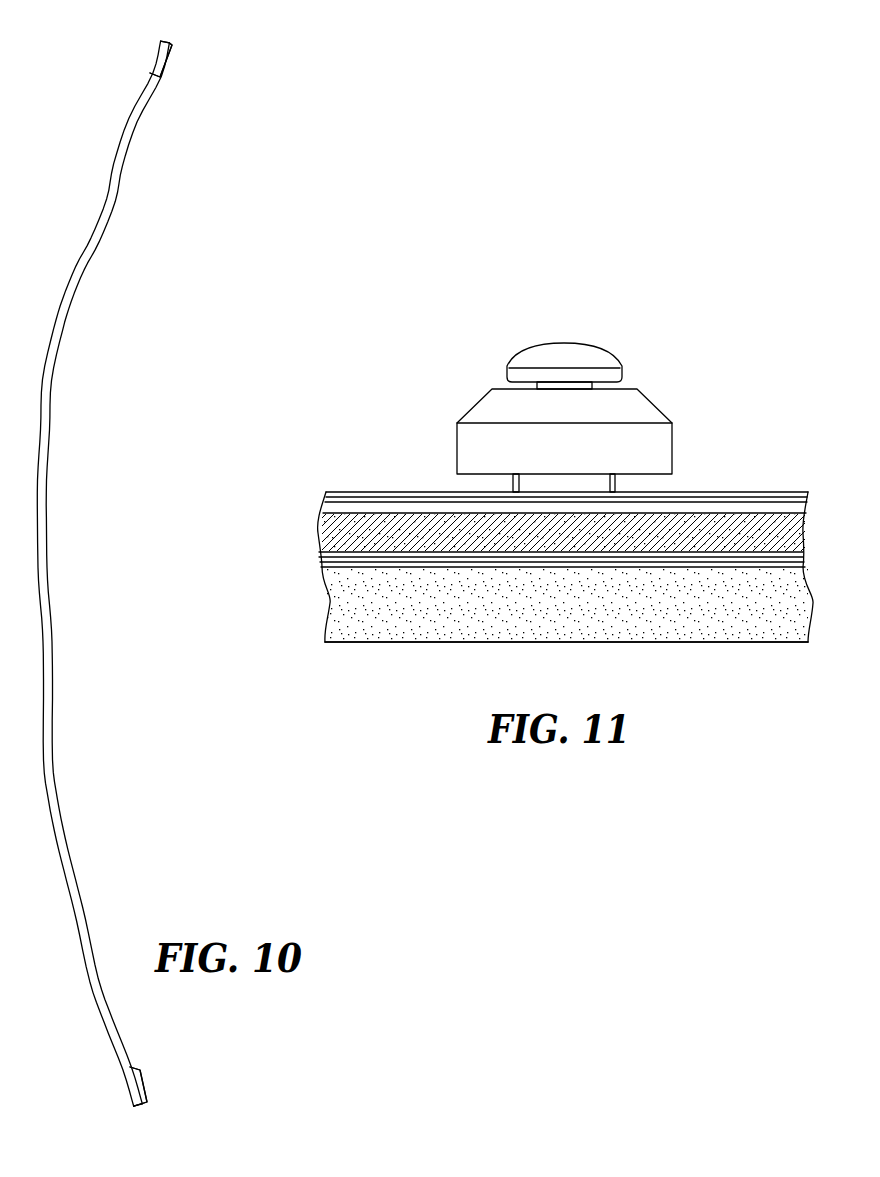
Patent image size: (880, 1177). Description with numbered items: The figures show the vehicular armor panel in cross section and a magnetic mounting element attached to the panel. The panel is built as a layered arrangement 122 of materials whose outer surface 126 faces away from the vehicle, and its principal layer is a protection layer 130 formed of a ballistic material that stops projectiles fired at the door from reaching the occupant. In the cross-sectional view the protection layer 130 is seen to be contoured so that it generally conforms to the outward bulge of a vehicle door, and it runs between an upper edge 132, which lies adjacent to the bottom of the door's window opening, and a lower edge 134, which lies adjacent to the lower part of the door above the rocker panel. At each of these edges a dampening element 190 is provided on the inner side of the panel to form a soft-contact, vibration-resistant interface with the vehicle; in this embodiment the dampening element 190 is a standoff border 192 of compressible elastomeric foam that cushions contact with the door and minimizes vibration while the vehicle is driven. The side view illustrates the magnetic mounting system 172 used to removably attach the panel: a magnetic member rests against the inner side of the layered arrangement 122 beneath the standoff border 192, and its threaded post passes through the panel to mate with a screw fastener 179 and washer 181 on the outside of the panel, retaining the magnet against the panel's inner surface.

In FIG. 11, the layered arrangement 122 is at (522, 529).
In FIG. 11, the outer surface 126 is at (370, 492).
In FIG. 10, the protection layer 130 is at (66, 877).
In FIG. 11, the protection layer 130 is at (343, 533).
In FIG. 10, the upper edge 132 is at (167, 37).
In FIG. 10, the lower edge 134 is at (138, 1105).
In FIG. 11, the magnetic mounting system 172 is at (556, 405).
In FIG. 11, the screw fastener 179 is at (596, 358).
In FIG. 11, the washer 181 is at (657, 443).
In FIG. 10, the dampening element 190 is at (168, 62).
In FIG. 11, the dampening element 190 is at (360, 618).
In FIG. 11, the standoff border 192 is at (345, 597).